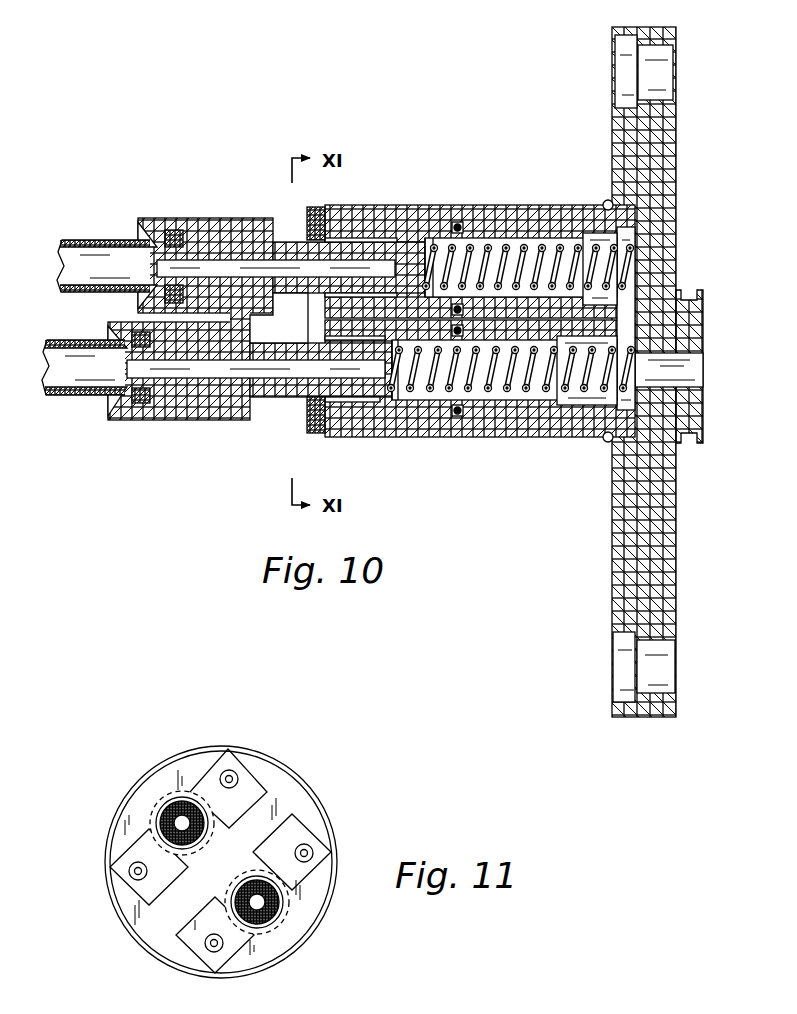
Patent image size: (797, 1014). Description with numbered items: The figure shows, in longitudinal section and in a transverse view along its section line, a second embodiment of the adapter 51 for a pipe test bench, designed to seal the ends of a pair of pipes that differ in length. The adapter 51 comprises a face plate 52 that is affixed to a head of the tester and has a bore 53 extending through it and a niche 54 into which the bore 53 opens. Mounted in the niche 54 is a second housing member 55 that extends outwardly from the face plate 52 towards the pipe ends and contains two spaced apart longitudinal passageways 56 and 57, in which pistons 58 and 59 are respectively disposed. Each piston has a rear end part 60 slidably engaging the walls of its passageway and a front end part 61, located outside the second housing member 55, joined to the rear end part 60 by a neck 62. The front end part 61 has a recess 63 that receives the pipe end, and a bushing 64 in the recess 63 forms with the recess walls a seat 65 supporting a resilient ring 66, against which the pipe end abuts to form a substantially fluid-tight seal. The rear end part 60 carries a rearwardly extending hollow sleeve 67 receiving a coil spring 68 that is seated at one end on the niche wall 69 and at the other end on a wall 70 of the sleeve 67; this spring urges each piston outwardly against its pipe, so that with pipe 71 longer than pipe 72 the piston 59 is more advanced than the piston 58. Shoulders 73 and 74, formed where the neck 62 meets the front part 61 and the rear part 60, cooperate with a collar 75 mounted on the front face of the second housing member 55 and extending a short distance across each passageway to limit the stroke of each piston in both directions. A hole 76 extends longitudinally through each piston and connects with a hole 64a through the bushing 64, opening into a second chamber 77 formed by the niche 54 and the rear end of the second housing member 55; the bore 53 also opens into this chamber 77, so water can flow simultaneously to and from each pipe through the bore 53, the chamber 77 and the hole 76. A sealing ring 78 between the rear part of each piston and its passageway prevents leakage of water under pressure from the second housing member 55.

In FIG. 10, the adapter 51 is at (402, 200).
In FIG. 10, the face plate 52 is at (678, 150).
In FIG. 10, the bore 53 is at (705, 372).
In FIG. 10, the niche 54 is at (602, 440).
In FIG. 10, the second housing member 55 is at (535, 210).
In FIG. 11, the second housing member 55 is at (312, 790).
In FIG. 10, the longitudinal passageway 56 is at (347, 228).
In FIG. 11, the longitudinal passageway 56 is at (195, 858).
In FIG. 10, the longitudinal passageway 57 is at (335, 420).
In FIG. 11, the longitudinal passageway 57 is at (232, 896).
In FIG. 10, the piston 58 is at (428, 240).
In FIG. 11, the piston 58 is at (205, 832).
In FIG. 10, the piston 59 is at (395, 400).
In FIG. 11, the piston 59 is at (248, 878).
In FIG. 10, the rear end part 60 is at (548, 250).
In FIG. 10, the front end part 61 is at (220, 228).
In FIG. 10, the neck 62 is at (290, 242).
In FIG. 10, the recess 63 is at (140, 232).
In FIG. 10, the bushing 64 is at (155, 242).
In FIG. 10, the hole 64a is at (150, 285).
In FIG. 10, the seat 65 is at (174, 232).
In FIG. 10, the ring 66 is at (192, 250).
In FIG. 10, the hollow sleeve 67 is at (595, 250).
In FIG. 10, the coil spring 68 is at (490, 250).
In FIG. 10, the niche wall 69 is at (640, 300).
In FIG. 10, the wall 70 is at (415, 262).
In FIG. 10, the pipe 71 is at (88, 240).
In FIG. 10, the pipe 72 is at (50, 380).
In FIG. 10, the shoulder 73 is at (270, 230).
In FIG. 10, the shoulder 74 is at (378, 240).
In FIG. 10, the collar 75 is at (316, 208).
In FIG. 11, the collar 75 is at (170, 760).
In FIG. 10, the hole 76 is at (263, 262).
In FIG. 11, the hole 76 is at (162, 808).
In FIG. 10, the second chamber 77 is at (632, 238).
In FIG. 10, the sealing ring 78 is at (458, 225).